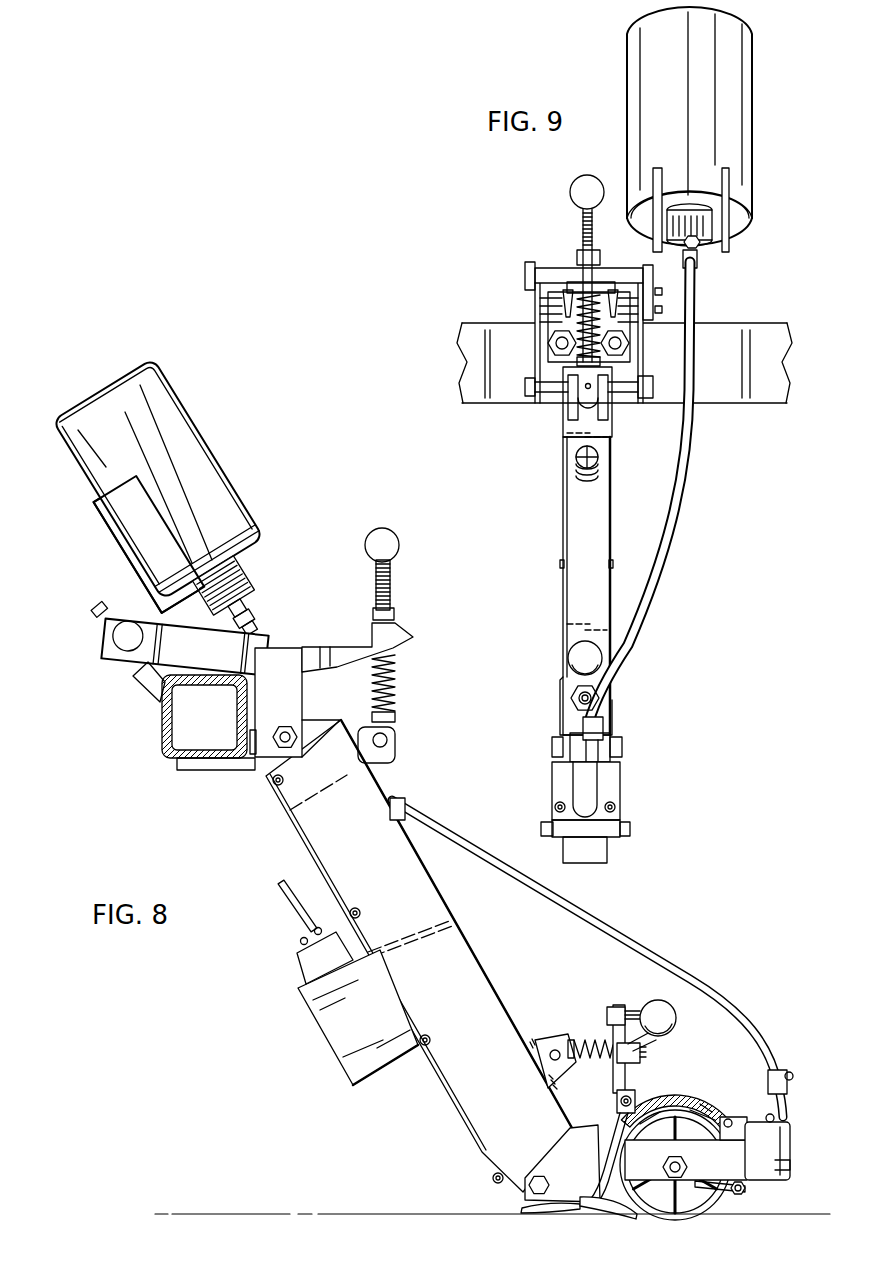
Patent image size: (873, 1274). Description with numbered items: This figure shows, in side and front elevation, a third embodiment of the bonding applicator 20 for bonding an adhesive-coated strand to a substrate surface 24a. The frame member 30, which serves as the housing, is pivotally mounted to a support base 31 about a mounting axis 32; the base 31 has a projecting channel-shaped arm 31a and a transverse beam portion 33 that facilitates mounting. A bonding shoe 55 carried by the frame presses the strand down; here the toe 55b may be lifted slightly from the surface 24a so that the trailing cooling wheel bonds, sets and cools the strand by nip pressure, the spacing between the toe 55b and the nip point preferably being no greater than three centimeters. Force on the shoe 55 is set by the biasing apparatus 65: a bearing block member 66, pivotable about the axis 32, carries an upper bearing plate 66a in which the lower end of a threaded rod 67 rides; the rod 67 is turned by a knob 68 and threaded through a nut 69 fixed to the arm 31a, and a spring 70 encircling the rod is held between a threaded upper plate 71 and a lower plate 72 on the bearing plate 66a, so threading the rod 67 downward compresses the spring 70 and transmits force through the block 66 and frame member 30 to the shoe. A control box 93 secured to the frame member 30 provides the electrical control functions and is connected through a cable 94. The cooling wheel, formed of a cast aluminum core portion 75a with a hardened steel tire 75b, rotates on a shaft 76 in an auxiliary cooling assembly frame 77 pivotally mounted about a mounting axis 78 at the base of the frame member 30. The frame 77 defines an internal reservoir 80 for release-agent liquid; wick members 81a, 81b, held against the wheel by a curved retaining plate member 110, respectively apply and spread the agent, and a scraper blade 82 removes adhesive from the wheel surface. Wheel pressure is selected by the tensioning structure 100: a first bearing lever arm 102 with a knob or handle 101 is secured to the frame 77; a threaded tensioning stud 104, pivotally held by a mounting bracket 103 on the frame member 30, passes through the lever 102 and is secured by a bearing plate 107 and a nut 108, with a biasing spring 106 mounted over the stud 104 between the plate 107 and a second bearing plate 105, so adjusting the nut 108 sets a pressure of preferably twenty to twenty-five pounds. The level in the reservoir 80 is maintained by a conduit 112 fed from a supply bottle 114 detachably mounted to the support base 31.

In FIG. 9, the bonding applicator 20 is at (548, 472).
In FIG. 8, the bonding applicator 20 is at (262, 815).
In FIG. 8, the substrate surface 24a is at (273, 1216).
In FIG. 9, the frame member 30 is at (563, 503).
In FIG. 8, the frame member 30 is at (484, 976).
In FIG. 8, the support base 31 is at (282, 655).
In FIG. 9, the channel-shaped arm 31a is at (617, 277).
In FIG. 8, the channel-shaped arm 31a is at (318, 653).
In FIG. 9, the mounting axis 32 is at (618, 398).
In FIG. 8, the mounting axis 32 is at (280, 745).
In FIG. 9, the transverse beam portion 33 is at (462, 343).
In FIG. 8, the transverse beam portion 33 is at (162, 717).
In FIG. 8, the bonding shoe 55 is at (526, 1206).
In FIG. 8, the bonding shoe toe 55b is at (588, 1202).
In FIG. 9, the biasing apparatus 65 is at (518, 300).
In FIG. 8, the biasing apparatus 65 is at (428, 668).
In FIG. 9, the bearing block member 66 is at (580, 405).
In FIG. 8, the bearing block member 66 is at (390, 760).
In FIG. 9, the upper bearing plate 66a is at (591, 380).
In FIG. 9, the threaded rod 67 is at (584, 218).
In FIG. 8, the threaded rod 67 is at (391, 588).
In FIG. 9, the knob 68 is at (580, 186).
In FIG. 8, the knob 68 is at (399, 548).
In FIG. 9, the nut 69 is at (577, 257).
In FIG. 8, the nut 69 is at (394, 615).
In FIG. 9, the spring 70 is at (582, 312).
In FIG. 8, the spring 70 is at (396, 689).
In FIG. 9, the threaded plate 71 is at (572, 286).
In FIG. 9, the lower plate 72 is at (578, 360).
In FIG. 8, the lower plate 72 is at (396, 716).
In FIG. 8, the cast aluminum core portion 75a is at (650, 1103).
In FIG. 9, the hardened steel tire 75b is at (608, 856).
In FIG. 8, the hardened steel tire 75b is at (683, 1148).
In FIG. 9, the shaft 76 is at (543, 828).
In FIG. 8, the shaft 76 is at (688, 1167).
In FIG. 8, the auxiliary cooling assembly frame 77 is at (730, 1155).
In FIG. 8, the mounting axis 78 is at (538, 1178).
In FIG. 9, the internal reservoir 80 is at (608, 791).
In FIG. 8, the internal reservoir 80 is at (791, 1142).
In FIG. 8, the forwardly disposed wick 81a is at (702, 1110).
In FIG. 8, the second wick 81b is at (670, 1106).
In FIG. 9, the scraper blade 82 is at (573, 832).
In FIG. 8, the scraper blade 82 is at (733, 1193).
In FIG. 8, the control box 93 is at (333, 1022).
In FIG. 8, the cable 94 is at (288, 904).
In FIG. 8, the tensioning structure 100 is at (578, 982).
In FIG. 9, the knob or handle 101 is at (568, 657).
In FIG. 8, the knob or handle 101 is at (657, 1002).
In FIG. 9, the first bearing lever arm 102 is at (562, 698).
In FIG. 8, the first bearing lever arm 102 is at (617, 1006).
In FIG. 8, the mounting bracket 103 is at (535, 1052).
In FIG. 8, the threaded tensioning stud 104 is at (677, 1023).
In FIG. 8, the second bearing plate 105 is at (570, 1046).
In FIG. 8, the biasing spring 106 is at (596, 1043).
In FIG. 8, the bearing plate 107 is at (610, 1068).
In FIG. 9, the nut 108 is at (592, 700).
In FIG. 8, the nut 108 is at (632, 1090).
In FIG. 9, the curved retaining plate member 110 is at (603, 742).
In FIG. 8, the curved retaining plate member 110 is at (704, 1105).
In FIG. 9, the conduit 112 is at (687, 493).
In FIG. 8, the conduit 112 is at (733, 1003).
In FIG. 9, the supply bottle 114 is at (752, 102).
In FIG. 8, the supply bottle 114 is at (180, 398).